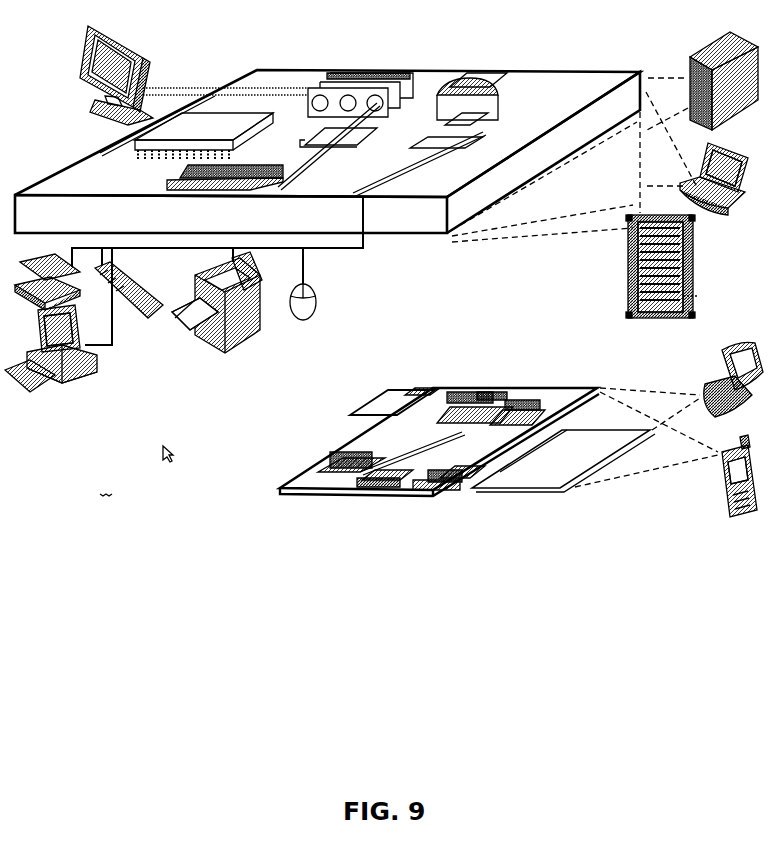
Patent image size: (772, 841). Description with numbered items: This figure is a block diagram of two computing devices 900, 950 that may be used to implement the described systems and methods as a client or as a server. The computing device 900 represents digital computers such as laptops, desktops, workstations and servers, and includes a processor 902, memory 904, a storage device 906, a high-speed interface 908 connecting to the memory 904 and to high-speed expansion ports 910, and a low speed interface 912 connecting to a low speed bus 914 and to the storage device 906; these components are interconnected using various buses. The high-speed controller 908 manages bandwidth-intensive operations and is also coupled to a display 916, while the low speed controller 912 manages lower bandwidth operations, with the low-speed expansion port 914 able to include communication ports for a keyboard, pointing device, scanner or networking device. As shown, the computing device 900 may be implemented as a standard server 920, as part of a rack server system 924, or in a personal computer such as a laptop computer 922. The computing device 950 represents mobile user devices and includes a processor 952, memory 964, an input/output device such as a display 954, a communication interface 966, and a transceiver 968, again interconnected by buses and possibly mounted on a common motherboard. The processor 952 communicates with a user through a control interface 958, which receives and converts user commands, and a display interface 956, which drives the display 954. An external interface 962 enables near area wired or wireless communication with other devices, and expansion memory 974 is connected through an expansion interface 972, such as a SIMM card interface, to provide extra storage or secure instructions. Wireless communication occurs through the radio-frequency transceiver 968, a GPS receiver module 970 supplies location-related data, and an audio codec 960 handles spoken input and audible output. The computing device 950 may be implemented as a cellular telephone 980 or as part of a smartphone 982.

The computing device 900 is at (210, 44).
The processor 902 is at (132, 144).
The memory 904 is at (349, 73).
The storage device 906 is at (284, 103).
The high-speed interface 908 is at (480, 80).
The high-speed expansion ports 910 is at (176, 184).
The low speed interface 912 is at (437, 135).
The low speed bus 914 is at (384, 196).
The display 916 is at (83, 47).
The standard server 920 is at (690, 66).
The laptop computer 922 is at (706, 157).
The rack server system 924 is at (629, 277).
The computing device 950 is at (416, 369).
The processor 952 is at (392, 483).
The display 954 is at (562, 486).
The display interface 956 is at (442, 487).
The control interface 958 is at (463, 486).
The audio codec 960 is at (475, 478).
The external interface 962 is at (369, 492).
The memory 964 is at (335, 455).
The communication interface 966 is at (465, 395).
The transceiver 968 is at (513, 400).
The GPS receiver module 970 is at (498, 393).
The expansion interface 972 is at (418, 395).
The expansion memory 974 is at (376, 401).
The cellular telephone 980 is at (735, 357).
The smartphone 982 is at (724, 445).